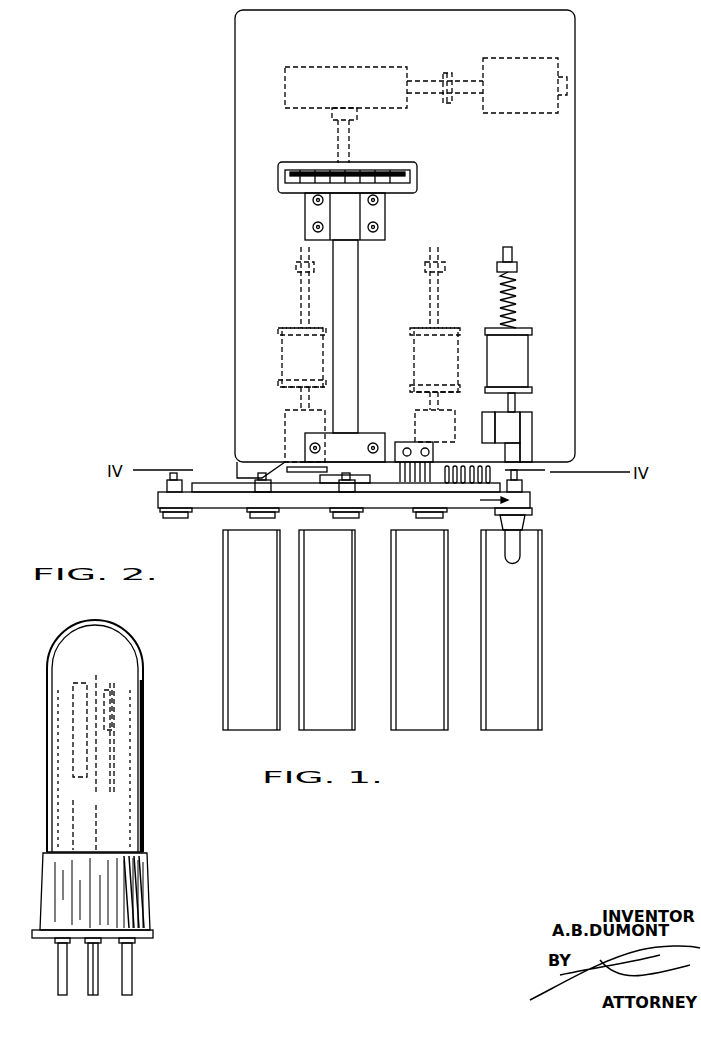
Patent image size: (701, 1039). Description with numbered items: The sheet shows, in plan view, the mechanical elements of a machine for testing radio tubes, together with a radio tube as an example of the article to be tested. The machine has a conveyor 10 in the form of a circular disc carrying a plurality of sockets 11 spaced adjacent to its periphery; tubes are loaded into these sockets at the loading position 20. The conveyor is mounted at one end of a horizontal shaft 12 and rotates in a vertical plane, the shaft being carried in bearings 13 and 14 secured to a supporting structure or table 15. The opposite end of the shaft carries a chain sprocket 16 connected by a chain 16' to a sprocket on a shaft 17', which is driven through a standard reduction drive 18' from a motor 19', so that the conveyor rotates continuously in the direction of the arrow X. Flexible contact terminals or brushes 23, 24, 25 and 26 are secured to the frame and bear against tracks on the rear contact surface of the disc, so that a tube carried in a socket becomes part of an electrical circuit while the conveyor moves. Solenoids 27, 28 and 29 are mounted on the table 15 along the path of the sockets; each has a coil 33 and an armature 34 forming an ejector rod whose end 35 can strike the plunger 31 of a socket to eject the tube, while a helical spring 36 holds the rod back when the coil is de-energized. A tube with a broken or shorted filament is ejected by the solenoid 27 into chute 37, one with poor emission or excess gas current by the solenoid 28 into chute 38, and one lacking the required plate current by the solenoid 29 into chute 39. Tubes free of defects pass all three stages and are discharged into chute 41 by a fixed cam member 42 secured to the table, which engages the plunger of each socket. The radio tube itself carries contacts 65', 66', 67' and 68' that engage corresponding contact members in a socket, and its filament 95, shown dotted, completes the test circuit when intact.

In FIG. 1, the conveyor 10 is at (528, 498).
In FIG. 1, the sockets 11 is at (495, 512).
In FIG. 1, the horizontal shaft 12 is at (347, 262).
In FIG. 1, the bearing 13 is at (358, 218).
In FIG. 1, the bearing 14 is at (358, 437).
In FIG. 1, the supporting structure or table 15 is at (568, 202).
In FIG. 1, the chain sprocket 16 is at (369, 175).
In FIG. 1, the chain 16' is at (353, 148).
In FIG. 1, the shaft 17' is at (323, 135).
In FIG. 1, the reduction drive 18' is at (346, 73).
In FIG. 1, the motor 19' is at (487, 73).
In FIG. 1, the loading position 20 is at (155, 502).
In FIG. 1, the contact terminal or brush 23 is at (462, 468).
In FIG. 1, the contact terminal or brush 24 is at (473, 468).
In FIG. 1, the contact terminal or brush 25 is at (483, 468).
In FIG. 1, the contact terminal or brush 26 is at (490, 468).
In FIG. 1, the solenoid 27 is at (529, 330).
In FIG. 1, the solenoid 28 is at (450, 330).
In FIG. 1, the solenoid 29 is at (283, 330).
In FIG. 1, the plunger 31 is at (268, 476).
In FIG. 1, the coil 33 is at (518, 353).
In FIG. 1, the armature 34 is at (506, 402).
In FIG. 1, the end of ejector rod 35 is at (300, 470).
In FIG. 1, the helical spring 36 is at (515, 287).
In FIG. 1, the chute 37 is at (511, 630).
In FIG. 1, the chute 38 is at (419, 630).
In FIG. 1, the chute 39 is at (327, 630).
In FIG. 1, the chute 41 is at (251, 630).
In FIG. 1, the fixed cam member 42 is at (238, 470).
In FIG. 2, the tube contact 65' is at (43, 967).
In FIG. 2, the tube contact 66' is at (79, 977).
In FIG. 2, the tube contact 67' is at (115, 980).
In FIG. 2, the tube contact 68' is at (150, 969).
In FIG. 2, the filament 95 is at (112, 749).